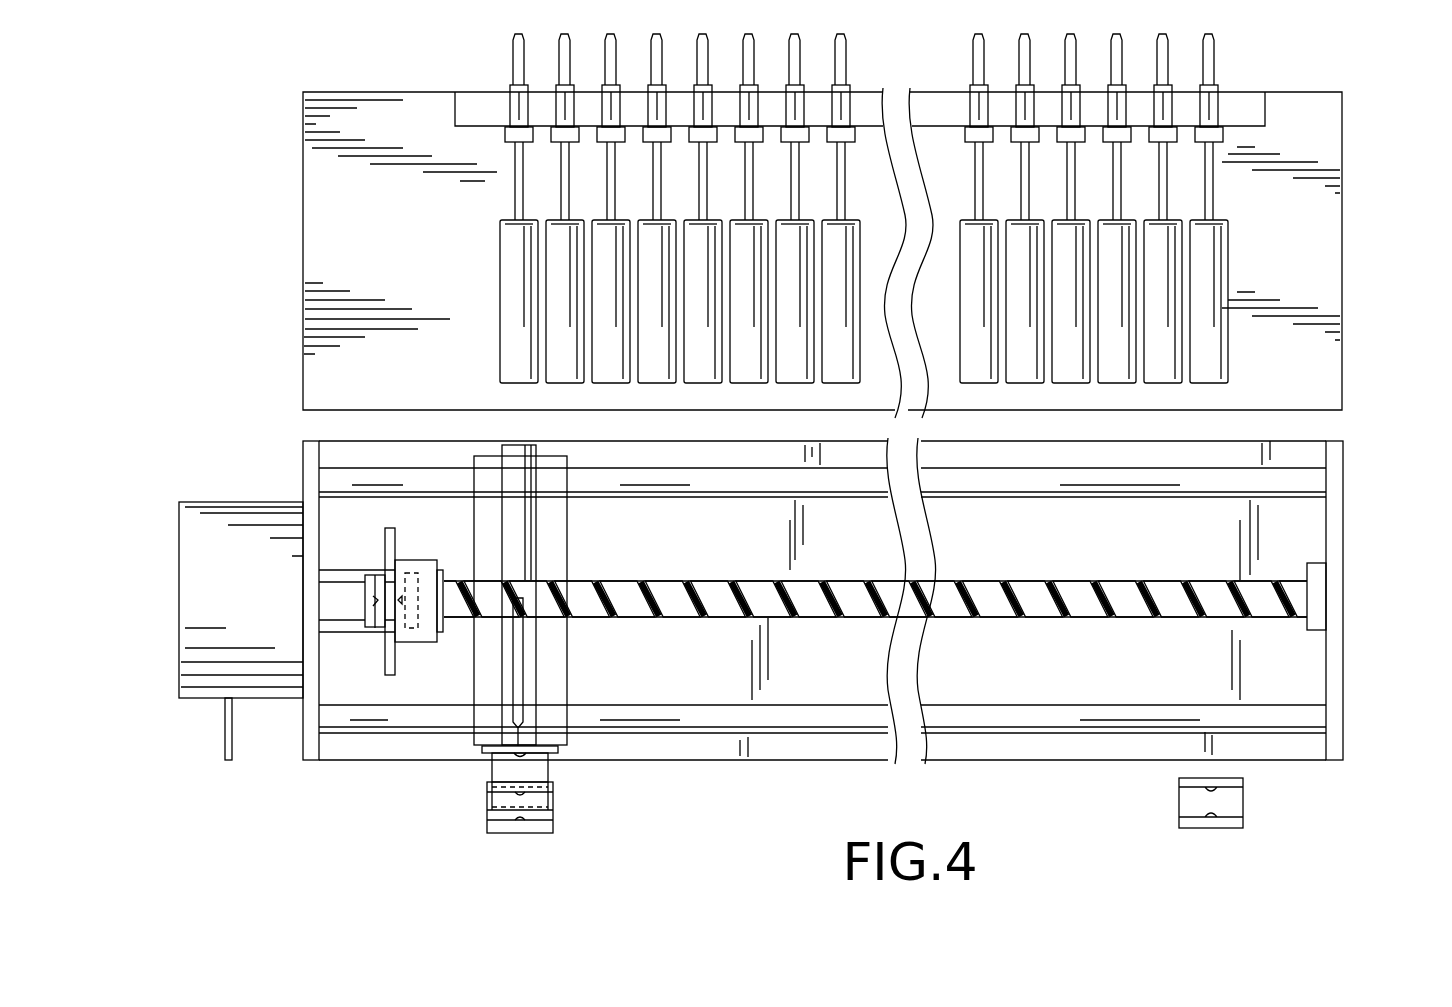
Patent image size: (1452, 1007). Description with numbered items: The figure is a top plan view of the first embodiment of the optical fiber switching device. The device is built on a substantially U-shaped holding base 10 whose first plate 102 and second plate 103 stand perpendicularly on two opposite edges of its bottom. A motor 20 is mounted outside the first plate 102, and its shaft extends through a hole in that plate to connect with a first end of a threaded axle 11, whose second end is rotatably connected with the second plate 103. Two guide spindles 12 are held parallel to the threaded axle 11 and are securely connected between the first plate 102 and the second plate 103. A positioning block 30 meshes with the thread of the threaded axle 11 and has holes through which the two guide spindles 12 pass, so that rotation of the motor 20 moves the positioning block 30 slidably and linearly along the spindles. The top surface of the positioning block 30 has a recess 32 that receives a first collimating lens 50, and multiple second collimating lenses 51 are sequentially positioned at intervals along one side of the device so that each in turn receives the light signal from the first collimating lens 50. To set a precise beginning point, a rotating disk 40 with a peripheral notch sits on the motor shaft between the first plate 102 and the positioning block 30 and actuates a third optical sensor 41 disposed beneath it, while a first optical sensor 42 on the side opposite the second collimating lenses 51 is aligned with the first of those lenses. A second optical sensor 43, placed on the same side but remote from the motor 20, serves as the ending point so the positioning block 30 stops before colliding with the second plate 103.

The holding base 10 is at (802, 663).
The threaded axle 11 is at (1105, 580).
The guide spindles 12 is at (1206, 483).
The motor 20 is at (232, 512).
The positioning block 30 is at (553, 595).
The recess 32 is at (532, 655).
The rotating disk 40 is at (415, 563).
The third optical sensor 41 is at (367, 612).
The first optical sensor 42 is at (533, 828).
The second optical sensor 43 is at (1222, 826).
The first collimating lens 50 is at (526, 519).
The second collimating lenses 51 is at (478, 298).
The first plate 102 is at (310, 746).
The second plate 103 is at (1334, 670).